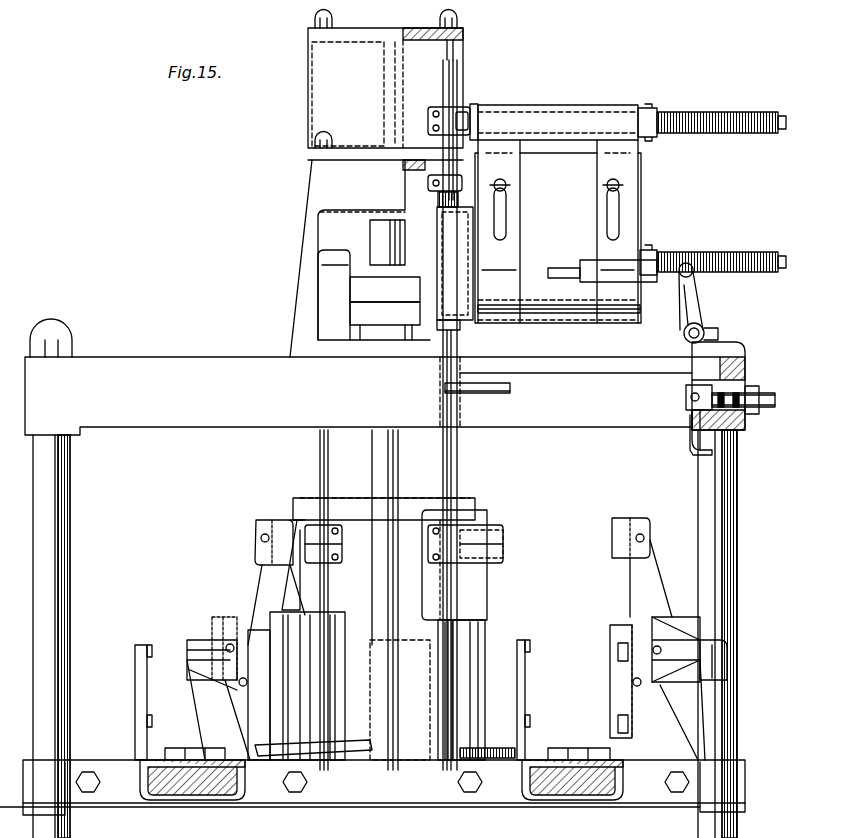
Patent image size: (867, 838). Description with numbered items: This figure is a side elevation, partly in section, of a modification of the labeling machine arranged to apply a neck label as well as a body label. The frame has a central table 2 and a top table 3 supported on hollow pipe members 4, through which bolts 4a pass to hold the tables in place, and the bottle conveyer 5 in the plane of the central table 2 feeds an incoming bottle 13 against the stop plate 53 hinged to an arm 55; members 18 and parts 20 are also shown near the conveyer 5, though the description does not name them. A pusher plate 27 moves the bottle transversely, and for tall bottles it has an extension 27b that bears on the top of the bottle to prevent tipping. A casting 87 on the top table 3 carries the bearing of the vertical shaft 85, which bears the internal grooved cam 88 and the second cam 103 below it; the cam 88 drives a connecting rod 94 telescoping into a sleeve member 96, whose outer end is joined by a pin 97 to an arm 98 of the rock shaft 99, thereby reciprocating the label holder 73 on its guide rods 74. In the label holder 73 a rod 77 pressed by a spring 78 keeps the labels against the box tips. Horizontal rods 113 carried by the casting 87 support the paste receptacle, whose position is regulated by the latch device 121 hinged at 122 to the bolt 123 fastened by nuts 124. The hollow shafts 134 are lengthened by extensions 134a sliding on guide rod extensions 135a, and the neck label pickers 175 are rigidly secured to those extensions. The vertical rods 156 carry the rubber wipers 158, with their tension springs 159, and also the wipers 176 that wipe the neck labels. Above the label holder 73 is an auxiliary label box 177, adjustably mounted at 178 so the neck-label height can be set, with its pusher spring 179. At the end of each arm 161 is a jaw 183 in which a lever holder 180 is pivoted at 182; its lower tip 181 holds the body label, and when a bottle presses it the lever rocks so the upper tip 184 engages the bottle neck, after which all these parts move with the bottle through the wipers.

The central table 2 is at (560, 805).
The top table 3 is at (760, 360).
The hollow pipe member 4 is at (68, 582).
The bolt 4a is at (728, 655).
The bottle conveyer 5 is at (381, 780).
The incoming bottle 13 is at (297, 565).
The support blocks 18 is at (190, 750).
The side plate 20 is at (136, 656).
The pusher plate 27 is at (438, 630).
The pusher plate extension 27b is at (412, 510).
The stop plate 53 is at (395, 718).
The arm 55 is at (360, 752).
The label holder 73 is at (558, 238).
The guide rod 74 is at (575, 314).
The rod 77 is at (784, 258).
The spring 78 is at (716, 254).
The vertical shaft 85 is at (388, 235).
The casting 87 is at (360, 258).
The internal grooved cam 88 is at (369, 295).
The connecting rod 94 is at (565, 279).
The cylindrical sleeve member 96 is at (618, 271).
The pin 97 is at (692, 275).
The arm 98 is at (700, 308).
The rock shaft 99 is at (699, 330).
The second internal grooved cam 103 is at (385, 313).
The horizontal rod 113 is at (494, 394).
The latch device 121 is at (705, 428).
The hinge 122 is at (685, 395).
The bolt 123 is at (775, 400).
The nut 124 is at (748, 396).
The hollow shaft 134 is at (453, 440).
The hollow shaft extension 134a is at (458, 80).
The guide rod extension 135a is at (455, 48).
The vertical rod 156 is at (320, 452).
The rubber wiper 158 is at (289, 632).
The tension spring 159 is at (480, 760).
The arm 161 is at (200, 694).
The neck label picker 175 is at (476, 108).
The wiper 176 is at (342, 560).
The auxiliary label box 177 is at (558, 214).
The adjustable mounting 178 is at (503, 222).
The spring 179 is at (710, 140).
The lever arm holder 180 is at (248, 577).
The tip 181 is at (462, 325).
The pivot 182 is at (228, 642).
The jaw 183 is at (197, 648).
The tip 184 is at (255, 549).